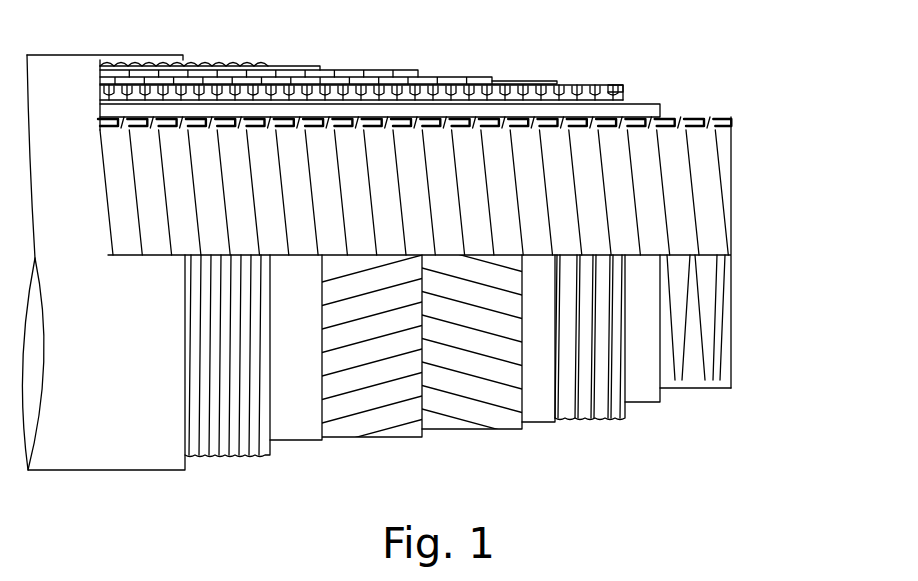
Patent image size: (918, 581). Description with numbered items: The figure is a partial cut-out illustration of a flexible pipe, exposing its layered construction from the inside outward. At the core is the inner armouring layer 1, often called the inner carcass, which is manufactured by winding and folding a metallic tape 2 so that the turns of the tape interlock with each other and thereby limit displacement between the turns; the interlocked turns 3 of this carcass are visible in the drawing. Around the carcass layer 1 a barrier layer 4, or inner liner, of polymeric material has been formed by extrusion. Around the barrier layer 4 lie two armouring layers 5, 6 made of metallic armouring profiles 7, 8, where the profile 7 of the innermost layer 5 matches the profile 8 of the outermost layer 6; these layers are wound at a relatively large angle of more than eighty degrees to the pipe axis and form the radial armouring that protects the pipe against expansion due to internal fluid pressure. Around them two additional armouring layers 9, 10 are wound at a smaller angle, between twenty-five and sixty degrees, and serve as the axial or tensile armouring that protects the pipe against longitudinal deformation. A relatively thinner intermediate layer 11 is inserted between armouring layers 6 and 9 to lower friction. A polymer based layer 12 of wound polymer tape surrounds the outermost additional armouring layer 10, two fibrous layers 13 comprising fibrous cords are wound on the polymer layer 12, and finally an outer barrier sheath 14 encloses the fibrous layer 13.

The inner armouring layer 1 is at (733, 168).
The metallic tape 2 is at (729, 116).
The corrugations 3 is at (707, 207).
The barrier layer 4 is at (658, 106).
The innermost armouring layer 5 is at (622, 95).
The outermost armouring layer 6 is at (606, 80).
The armouring profile 7 is at (585, 84).
The armouring profile 8 is at (361, 63).
The additional armouring layer 9 is at (473, 76).
The additional armouring layer 10 is at (406, 68).
The intermediate layer 11 is at (539, 80).
The polymer based layer 12 is at (296, 66).
The fibrous layer 13 is at (218, 62).
The outer barrier sheath 14 is at (135, 57).